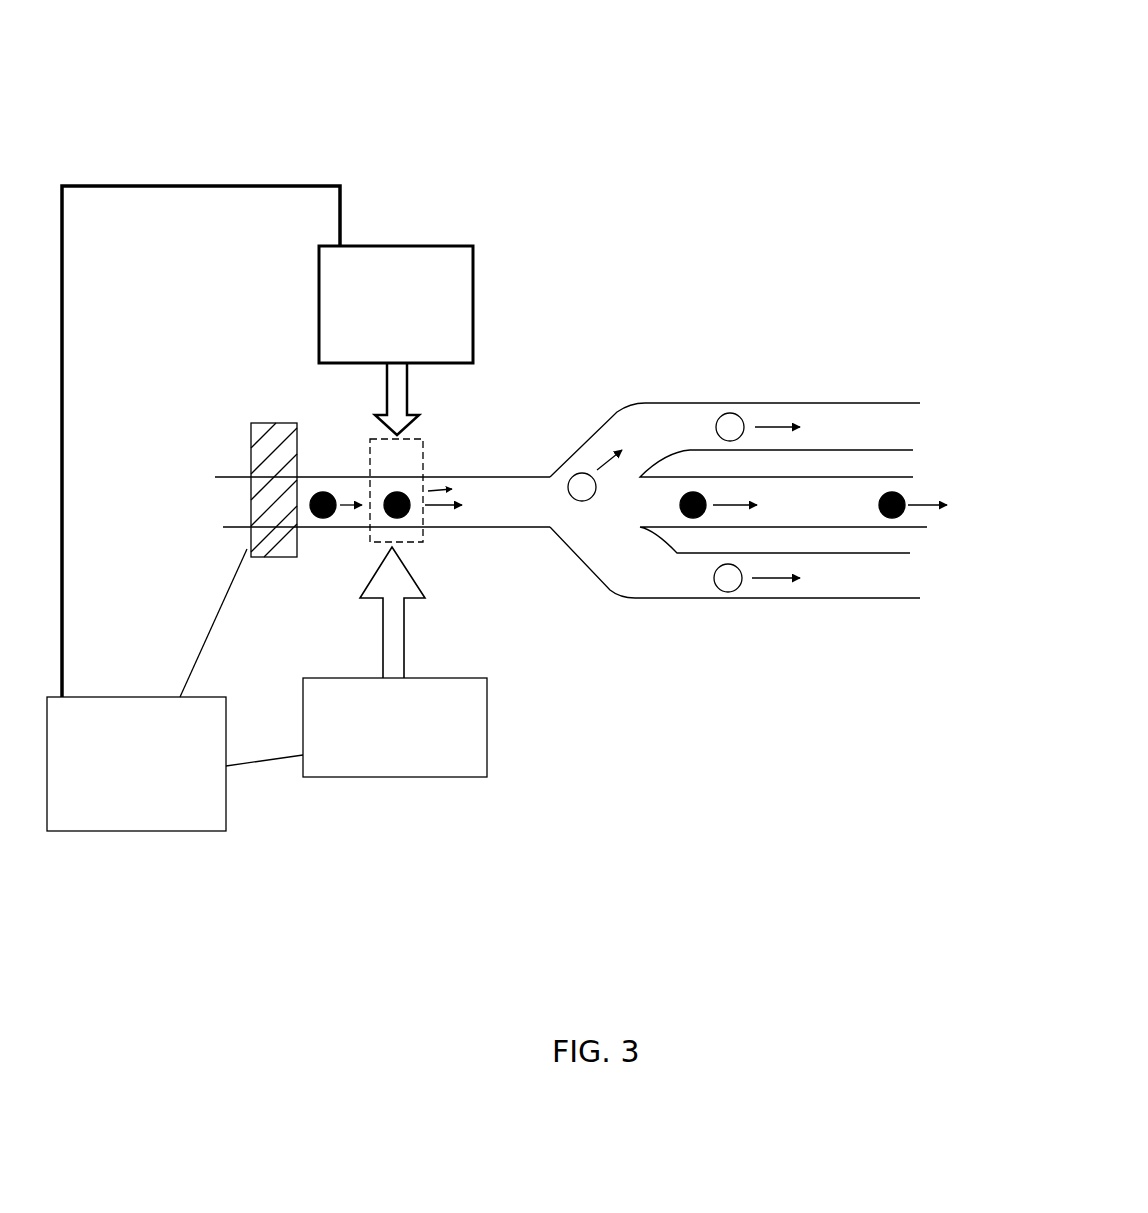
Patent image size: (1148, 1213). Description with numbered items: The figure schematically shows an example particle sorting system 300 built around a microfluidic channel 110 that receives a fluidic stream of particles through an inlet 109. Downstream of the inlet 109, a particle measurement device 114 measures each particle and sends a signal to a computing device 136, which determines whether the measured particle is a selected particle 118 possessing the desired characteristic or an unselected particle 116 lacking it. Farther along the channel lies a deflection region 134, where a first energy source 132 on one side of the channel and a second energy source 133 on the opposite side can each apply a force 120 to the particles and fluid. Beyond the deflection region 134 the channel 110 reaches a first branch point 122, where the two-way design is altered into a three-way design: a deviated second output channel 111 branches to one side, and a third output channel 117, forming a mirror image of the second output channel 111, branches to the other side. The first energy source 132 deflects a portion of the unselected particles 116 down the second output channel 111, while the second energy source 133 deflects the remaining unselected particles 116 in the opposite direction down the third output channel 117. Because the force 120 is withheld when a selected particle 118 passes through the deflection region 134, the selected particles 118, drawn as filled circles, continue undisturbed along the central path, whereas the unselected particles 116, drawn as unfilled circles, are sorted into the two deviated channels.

The system 300 is at (745, 140).
The inlet 109 is at (200, 477).
The microfluidic channel 110 is at (213, 500).
The second output channel 111 is at (672, 423).
The particle measurement device 114 is at (268, 440).
The unselected particles 116 is at (574, 460).
The third output channel 117 is at (672, 580).
The selected particles 118 is at (320, 492).
The force 120 is at (378, 388).
The first branch point 122 is at (573, 542).
The first energy source 132 is at (485, 697).
The second energy source 133 is at (398, 228).
The deflection region 134 is at (430, 455).
The computing device 136 is at (203, 833).